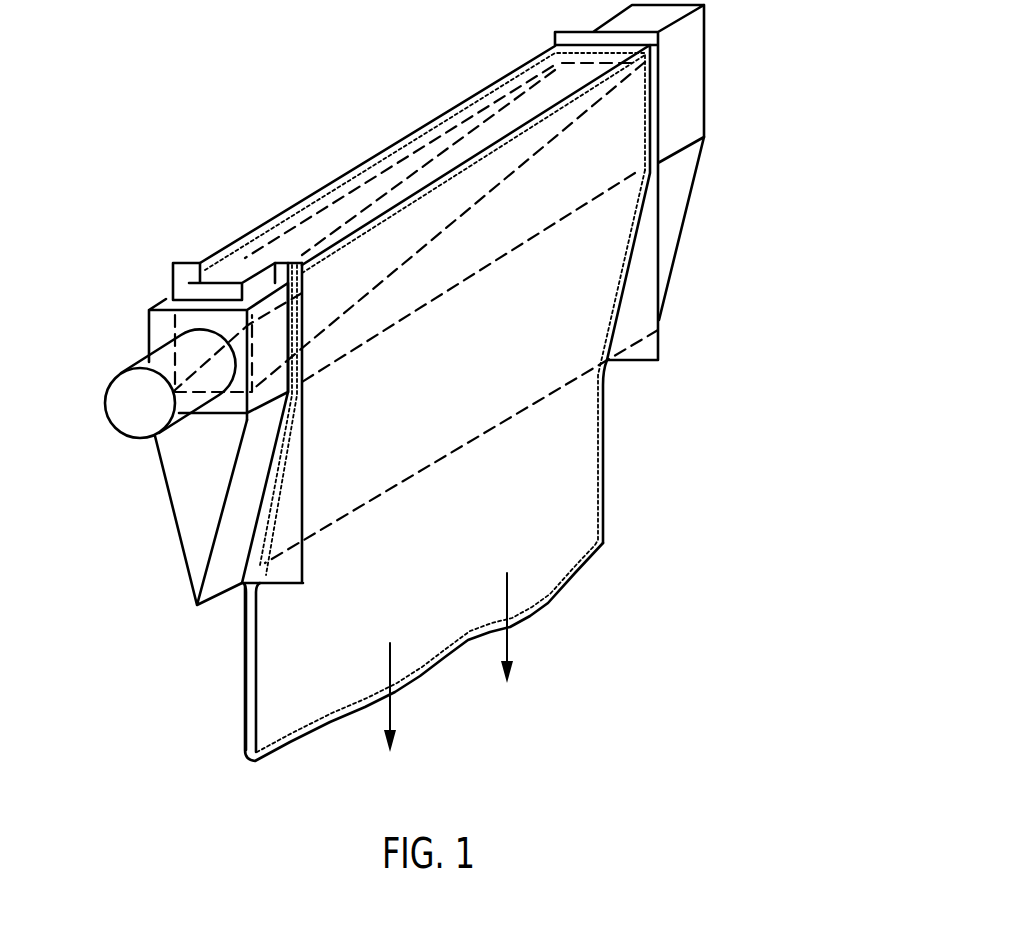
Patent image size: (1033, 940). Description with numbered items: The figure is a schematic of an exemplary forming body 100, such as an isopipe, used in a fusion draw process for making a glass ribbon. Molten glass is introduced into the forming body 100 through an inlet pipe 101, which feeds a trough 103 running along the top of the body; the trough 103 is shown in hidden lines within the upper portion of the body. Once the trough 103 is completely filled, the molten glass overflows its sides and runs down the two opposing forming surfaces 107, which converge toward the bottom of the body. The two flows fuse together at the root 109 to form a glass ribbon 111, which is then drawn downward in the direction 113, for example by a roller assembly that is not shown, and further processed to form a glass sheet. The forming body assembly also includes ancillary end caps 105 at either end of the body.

The forming body 100 is at (762, 96).
The inlet pipe 101 is at (123, 413).
The trough 103 is at (368, 262).
The end caps 105 is at (188, 507).
The forming surfaces 107 is at (483, 368).
The root 109 is at (232, 592).
The glass ribbon 111 is at (272, 708).
The direction 113 is at (510, 643).